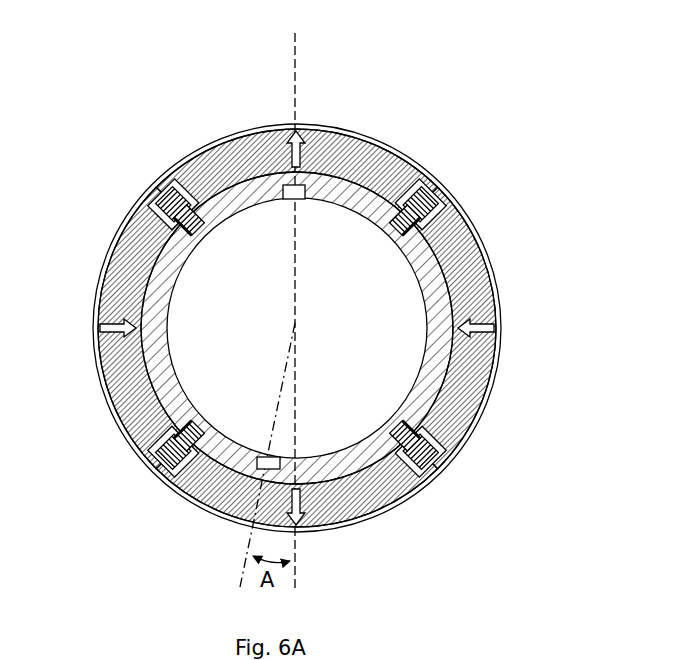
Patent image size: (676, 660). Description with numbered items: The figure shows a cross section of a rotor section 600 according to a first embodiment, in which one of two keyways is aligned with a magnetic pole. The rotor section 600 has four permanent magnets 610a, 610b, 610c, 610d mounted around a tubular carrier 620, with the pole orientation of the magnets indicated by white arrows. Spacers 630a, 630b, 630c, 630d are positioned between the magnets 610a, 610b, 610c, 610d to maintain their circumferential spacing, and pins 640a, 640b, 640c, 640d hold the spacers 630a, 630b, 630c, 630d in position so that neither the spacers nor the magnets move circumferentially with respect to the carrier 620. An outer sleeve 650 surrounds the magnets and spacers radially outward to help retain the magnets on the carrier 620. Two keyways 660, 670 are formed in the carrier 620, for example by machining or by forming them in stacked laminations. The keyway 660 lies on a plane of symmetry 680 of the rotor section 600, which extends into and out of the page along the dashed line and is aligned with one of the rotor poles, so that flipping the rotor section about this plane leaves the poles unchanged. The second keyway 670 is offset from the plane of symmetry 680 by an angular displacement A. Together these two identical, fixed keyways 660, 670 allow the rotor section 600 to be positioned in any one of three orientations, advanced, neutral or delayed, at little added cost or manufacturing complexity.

The rotor section 600 is at (205, 98).
The magnet 610a is at (375, 145).
The magnet 610b is at (492, 283).
The magnet 610c is at (385, 512).
The magnet 610d is at (108, 247).
The tubular carrier 620 is at (170, 298).
The spacer 630a is at (453, 165).
The spacer 630b is at (445, 472).
The spacer 630c is at (162, 470).
The spacer 630d is at (162, 182).
The pin 640a is at (400, 227).
The pin 640b is at (390, 428).
The pin 640c is at (193, 425).
The pin 640d is at (197, 227).
The outer sleeve 650 is at (317, 127).
The keyway 660 is at (283, 190).
The keyway 670 is at (265, 458).
The plane of symmetry 680 is at (293, 55).